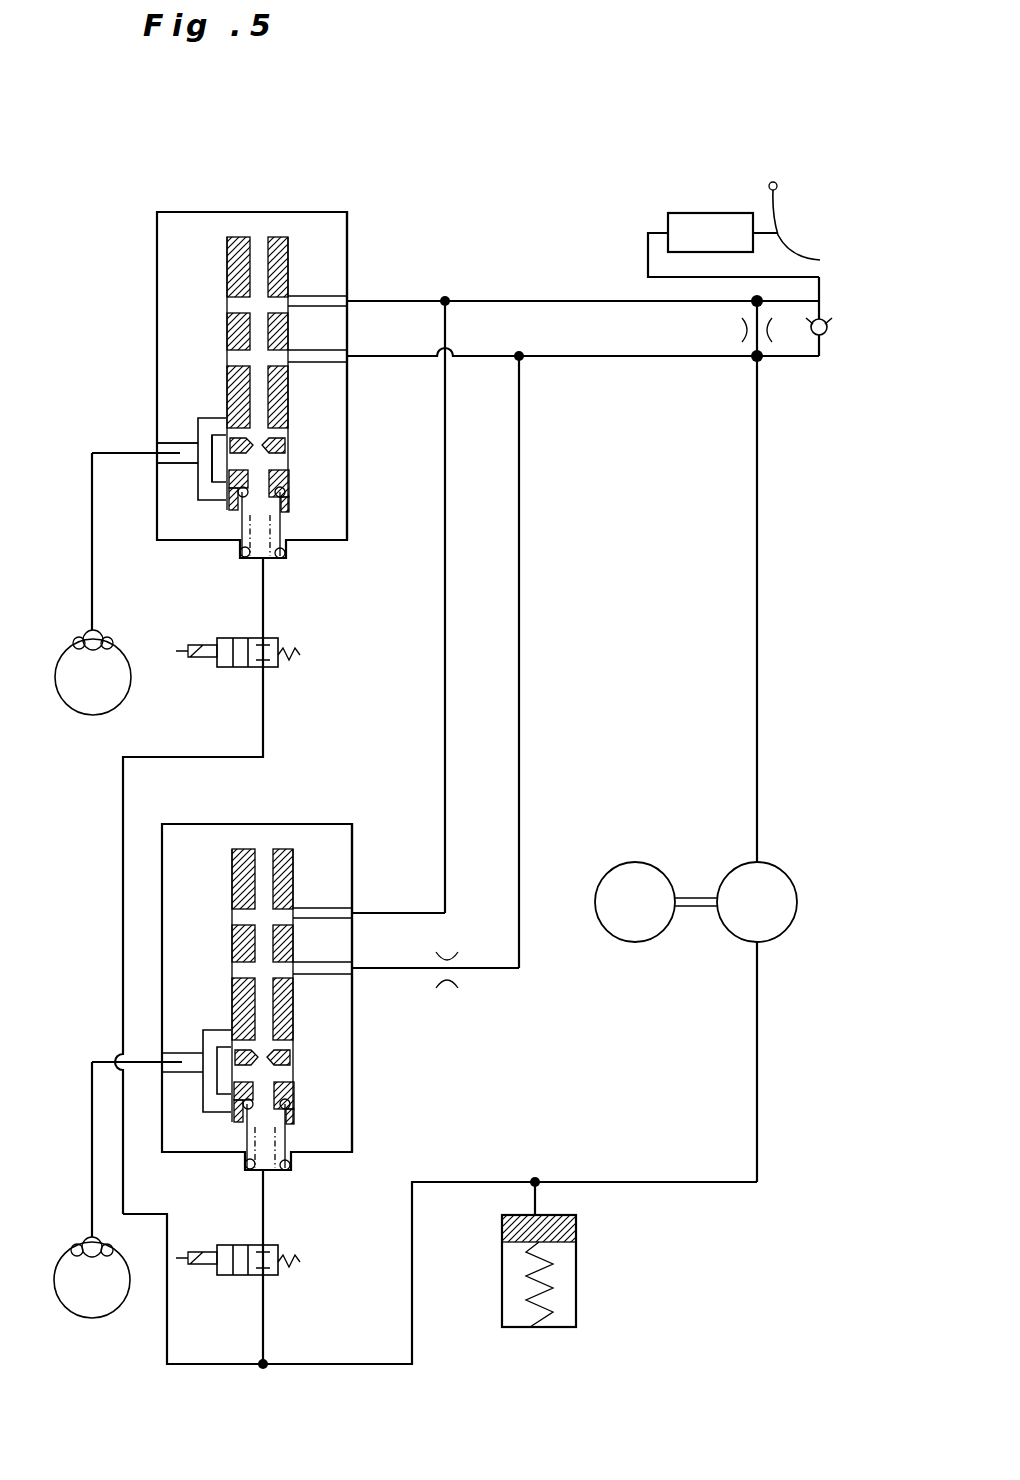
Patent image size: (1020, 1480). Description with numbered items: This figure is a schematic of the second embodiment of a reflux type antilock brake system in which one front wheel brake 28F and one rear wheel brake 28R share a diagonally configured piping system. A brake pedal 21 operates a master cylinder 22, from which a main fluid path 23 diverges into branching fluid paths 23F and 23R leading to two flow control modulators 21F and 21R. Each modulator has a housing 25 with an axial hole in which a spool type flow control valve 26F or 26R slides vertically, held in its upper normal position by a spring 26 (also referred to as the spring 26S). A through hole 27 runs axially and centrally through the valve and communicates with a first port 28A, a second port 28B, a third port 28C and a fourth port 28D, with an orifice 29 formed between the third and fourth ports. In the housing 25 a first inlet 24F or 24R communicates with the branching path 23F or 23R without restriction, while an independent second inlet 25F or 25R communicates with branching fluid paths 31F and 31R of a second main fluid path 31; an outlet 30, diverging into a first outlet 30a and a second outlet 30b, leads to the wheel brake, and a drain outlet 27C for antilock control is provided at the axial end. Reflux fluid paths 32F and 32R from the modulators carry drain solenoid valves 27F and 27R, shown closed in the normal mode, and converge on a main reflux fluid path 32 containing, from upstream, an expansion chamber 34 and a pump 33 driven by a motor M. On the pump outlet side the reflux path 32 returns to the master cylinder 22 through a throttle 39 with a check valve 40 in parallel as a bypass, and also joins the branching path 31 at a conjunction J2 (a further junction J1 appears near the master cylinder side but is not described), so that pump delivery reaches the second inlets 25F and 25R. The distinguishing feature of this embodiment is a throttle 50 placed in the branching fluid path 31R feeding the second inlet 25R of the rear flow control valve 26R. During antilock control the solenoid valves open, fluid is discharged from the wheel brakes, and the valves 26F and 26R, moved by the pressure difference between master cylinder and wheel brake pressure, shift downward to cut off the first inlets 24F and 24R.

The brake pedal 21 is at (827, 267).
The master cylinder 22 is at (702, 212).
The main fluid path 23 is at (555, 298).
The branching fluid path 23F is at (412, 298).
The branching fluid path 23R is at (445, 536).
The first inlet 24F is at (350, 298).
The first inlet 24R is at (398, 881).
The housing 25 is at (190, 232).
The second inlet 25F is at (350, 360).
The second inlet 25R is at (435, 998).
The spool type flow control valve 26F is at (241, 265).
The spool type flow control valve 26R is at (244, 946).
The spring 26 is at (314, 1165).
The spring 26S is at (283, 523).
The through hole 27 is at (259, 262).
The drain outlet 27C is at (262, 540).
The solenoid valve 27F is at (222, 668).
The solenoid valve 27R is at (222, 1276).
The first port 28A is at (265, 305).
The second port 28B is at (265, 354).
The third port 28C is at (240, 432).
The fourth port 28D is at (216, 470).
The front wheel brake 28F is at (93, 712).
The rear wheel brake 28R is at (92, 1318).
The orifice 29 is at (283, 452).
The outlet 30 is at (165, 472).
The first outlet 30a is at (200, 437).
The second outlet 30b is at (214, 500).
The second main fluid path 31 is at (652, 358).
The branching fluid path 31F is at (485, 355).
The branching fluid path 31R is at (522, 652).
The reflux fluid path 32 is at (757, 728).
The reflux fluid path 32F is at (266, 724).
The reflux fluid path 32R is at (266, 1327).
The reflux pump 33 is at (745, 942).
The expansion chamber 34 is at (578, 1298).
The throttle 39 is at (740, 330).
The check valve 40 is at (822, 346).
The throttle 50 is at (448, 958).
The flow control modulator 21F is at (155, 250).
The flow control modulator 21R is at (160, 858).
The first junction J1 is at (748, 300).
The conjunction J2 is at (752, 362).